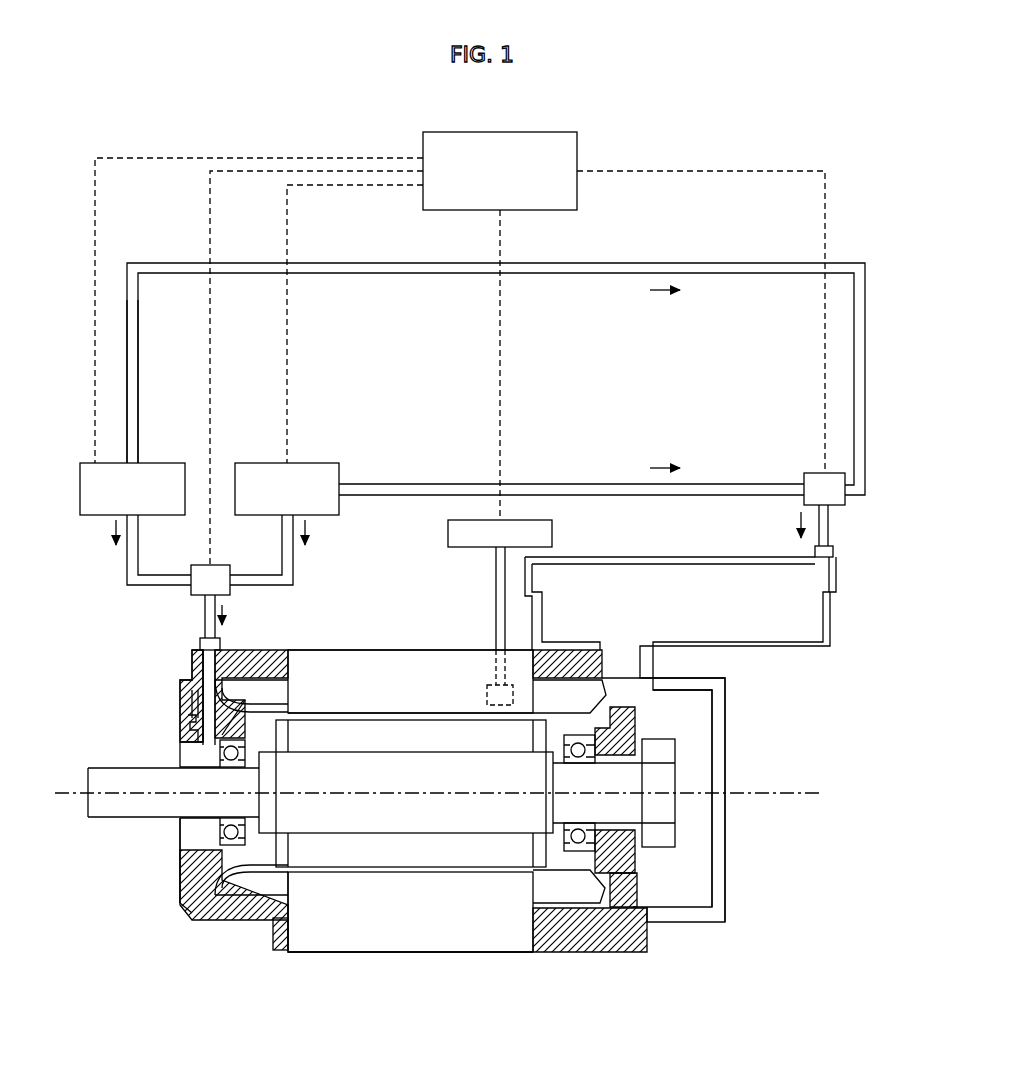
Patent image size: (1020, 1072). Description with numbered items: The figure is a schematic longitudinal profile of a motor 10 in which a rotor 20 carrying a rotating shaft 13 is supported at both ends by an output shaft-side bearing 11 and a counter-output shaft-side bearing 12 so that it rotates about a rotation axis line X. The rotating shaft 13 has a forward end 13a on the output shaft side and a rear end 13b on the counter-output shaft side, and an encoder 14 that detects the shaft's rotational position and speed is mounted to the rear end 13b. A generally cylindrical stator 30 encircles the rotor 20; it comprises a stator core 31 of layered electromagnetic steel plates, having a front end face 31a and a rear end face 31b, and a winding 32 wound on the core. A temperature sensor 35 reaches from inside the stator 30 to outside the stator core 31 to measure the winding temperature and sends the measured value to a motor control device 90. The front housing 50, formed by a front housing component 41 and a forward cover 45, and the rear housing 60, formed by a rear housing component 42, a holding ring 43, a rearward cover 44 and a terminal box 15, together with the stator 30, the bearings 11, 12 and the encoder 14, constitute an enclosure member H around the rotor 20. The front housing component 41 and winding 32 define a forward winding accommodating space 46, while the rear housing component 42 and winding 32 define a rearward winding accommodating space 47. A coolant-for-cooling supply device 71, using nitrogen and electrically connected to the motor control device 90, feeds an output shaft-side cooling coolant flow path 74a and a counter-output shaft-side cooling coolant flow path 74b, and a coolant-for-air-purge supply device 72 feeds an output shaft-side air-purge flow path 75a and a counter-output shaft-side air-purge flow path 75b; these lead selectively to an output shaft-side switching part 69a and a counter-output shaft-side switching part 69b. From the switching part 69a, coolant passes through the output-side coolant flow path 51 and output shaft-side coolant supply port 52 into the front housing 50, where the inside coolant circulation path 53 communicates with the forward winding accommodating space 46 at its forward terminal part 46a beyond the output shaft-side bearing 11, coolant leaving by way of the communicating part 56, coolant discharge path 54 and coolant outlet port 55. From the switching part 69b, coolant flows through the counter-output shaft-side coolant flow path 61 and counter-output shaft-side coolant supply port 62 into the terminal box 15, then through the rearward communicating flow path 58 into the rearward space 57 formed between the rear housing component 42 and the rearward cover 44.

The motor 10 is at (76, 246).
The output shaft-side bearing 11 is at (230, 850).
The counter-output shaft-side bearing 12 is at (580, 858).
The rotating shaft 13 is at (423, 835).
The forward end 13a is at (106, 826).
The rear end 13b is at (690, 762).
The encoder 14 is at (676, 830).
The terminal box 15 is at (700, 557).
The rotor 20 is at (450, 735).
The stator 30 is at (404, 644).
The stator core 31 is at (323, 668).
The front end face 31a is at (280, 935).
The rear end face 31b is at (540, 942).
The winding 32 is at (243, 888).
The temperature sensor 35 is at (448, 533).
The front housing component 41 is at (255, 650).
The rear housing component 42 is at (605, 952).
The holding ring 43 is at (635, 876).
The rearward cover 44 is at (726, 735).
The forward cover 45 is at (212, 756).
The forward winding accommodating space 46 is at (265, 862).
The forward terminal part 46a is at (205, 922).
The rearward winding accommodating space 47 is at (556, 728).
The front housing 50 is at (172, 668).
The output-side coolant flow path 51 is at (203, 622).
The output shaft-side coolant supply port 52 is at (222, 645).
The inside coolant circulation path 53 is at (210, 692).
The coolant discharge path 54 is at (204, 727).
The coolant outlet port 55 is at (190, 824).
The communicating part 56 is at (372, 700).
The rearward space 57 is at (690, 718).
The rearward communicating flow path 58 is at (618, 664).
The rear housing 60 is at (852, 668).
The counter-output shaft-side coolant flow path 61 is at (830, 528).
The counter-output shaft-side coolant supply port 62 is at (834, 553).
The output shaft-side switching part 69a is at (220, 565).
The counter-output shaft-side switching part 69b is at (810, 473).
The coolant-for-cooling supply device 71 is at (310, 462).
The coolant-for-air-purge supply device 72 is at (150, 462).
The output shaft-side cooling coolant flow path 74a is at (293, 578).
The counter-output shaft-side cooling coolant flow path 74b is at (425, 484).
The output shaft-side air-purge flow path 75a is at (138, 578).
The counter-output shaft-side air-purge flow path 75b is at (140, 410).
The motor control device 90 is at (538, 130).
The rotation axis line X is at (72, 790).
The enclosure member H is at (366, 968).